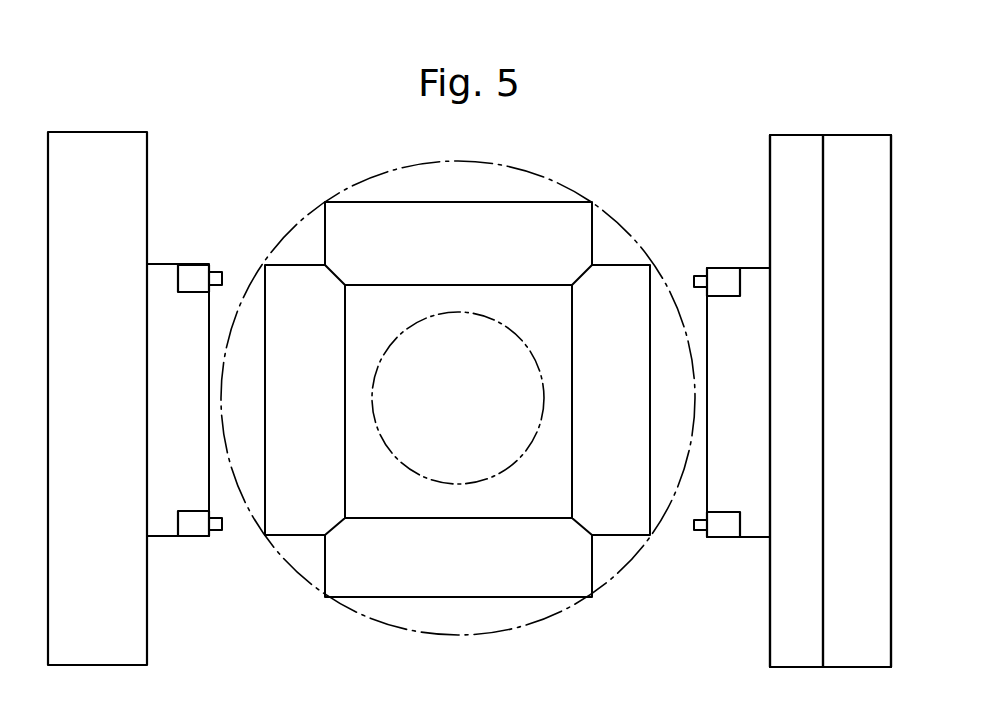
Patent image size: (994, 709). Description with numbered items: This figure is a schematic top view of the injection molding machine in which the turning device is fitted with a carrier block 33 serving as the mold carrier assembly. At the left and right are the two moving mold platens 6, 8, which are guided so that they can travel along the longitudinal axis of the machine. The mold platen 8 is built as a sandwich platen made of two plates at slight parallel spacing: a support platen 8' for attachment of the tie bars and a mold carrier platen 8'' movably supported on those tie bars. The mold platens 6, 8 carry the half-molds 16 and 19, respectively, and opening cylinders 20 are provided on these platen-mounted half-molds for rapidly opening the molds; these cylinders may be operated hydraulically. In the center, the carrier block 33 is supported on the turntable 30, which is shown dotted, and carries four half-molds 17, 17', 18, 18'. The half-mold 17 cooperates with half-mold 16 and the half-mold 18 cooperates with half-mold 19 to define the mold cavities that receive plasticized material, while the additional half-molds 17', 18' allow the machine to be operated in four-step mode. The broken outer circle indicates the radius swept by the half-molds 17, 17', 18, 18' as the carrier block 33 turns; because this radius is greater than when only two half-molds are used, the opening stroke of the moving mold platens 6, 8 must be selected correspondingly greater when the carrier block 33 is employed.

The moving mold platen 6 is at (94, 147).
The moving mold platen 8 is at (830, 361).
The support platen 8' is at (857, 376).
The mold carrier platen 8'' is at (796, 373).
The half-mold 16 is at (162, 280).
The half-mold 17 is at (289, 366).
The half-mold 17' is at (452, 588).
The half-mold 18 is at (633, 369).
The half-mold 18' is at (458, 195).
The half-mold 19 is at (757, 276).
The opening cylinder 20 is at (190, 523).
The turntable 30 is at (488, 472).
The carrier block 33 is at (545, 502).